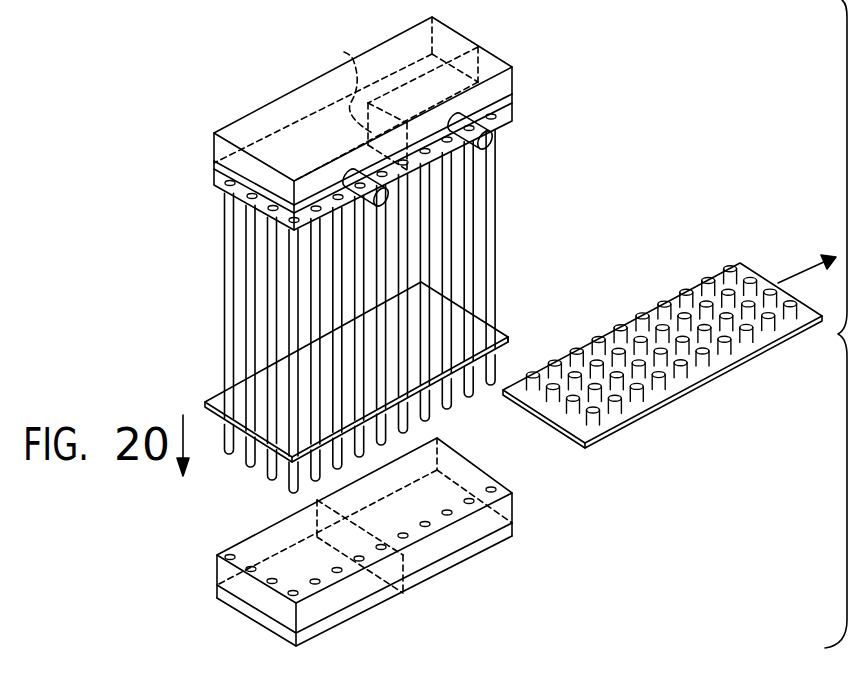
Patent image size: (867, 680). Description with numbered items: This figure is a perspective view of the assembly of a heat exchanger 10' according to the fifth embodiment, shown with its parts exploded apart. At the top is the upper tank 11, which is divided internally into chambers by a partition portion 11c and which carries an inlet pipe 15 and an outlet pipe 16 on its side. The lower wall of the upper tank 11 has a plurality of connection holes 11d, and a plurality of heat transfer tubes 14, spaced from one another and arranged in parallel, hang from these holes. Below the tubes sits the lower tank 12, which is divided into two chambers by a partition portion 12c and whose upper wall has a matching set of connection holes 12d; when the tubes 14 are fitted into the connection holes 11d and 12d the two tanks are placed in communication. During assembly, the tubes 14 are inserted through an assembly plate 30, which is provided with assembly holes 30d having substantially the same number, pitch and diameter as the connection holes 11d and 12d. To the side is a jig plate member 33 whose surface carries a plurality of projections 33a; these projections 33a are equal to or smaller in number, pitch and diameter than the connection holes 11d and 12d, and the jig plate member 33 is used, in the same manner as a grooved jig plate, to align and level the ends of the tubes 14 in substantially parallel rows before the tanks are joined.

The heat exchanger 10' is at (117, 242).
The upper tank 11 is at (504, 54).
The partition portion 11c is at (344, 52).
The connection holes 11d is at (514, 116).
The lower tank 12 is at (513, 483).
The partition portion 12c is at (403, 596).
The connection holes 12d is at (228, 554).
The heat transfer tubes 14 is at (506, 186).
The inlet pipe 15 is at (352, 184).
The outlet pipe 16 is at (494, 145).
The assembly plate 30 is at (205, 400).
The assembly holes 30d is at (508, 338).
The jig plate member 33 is at (653, 300).
The projections 33a is at (728, 358).